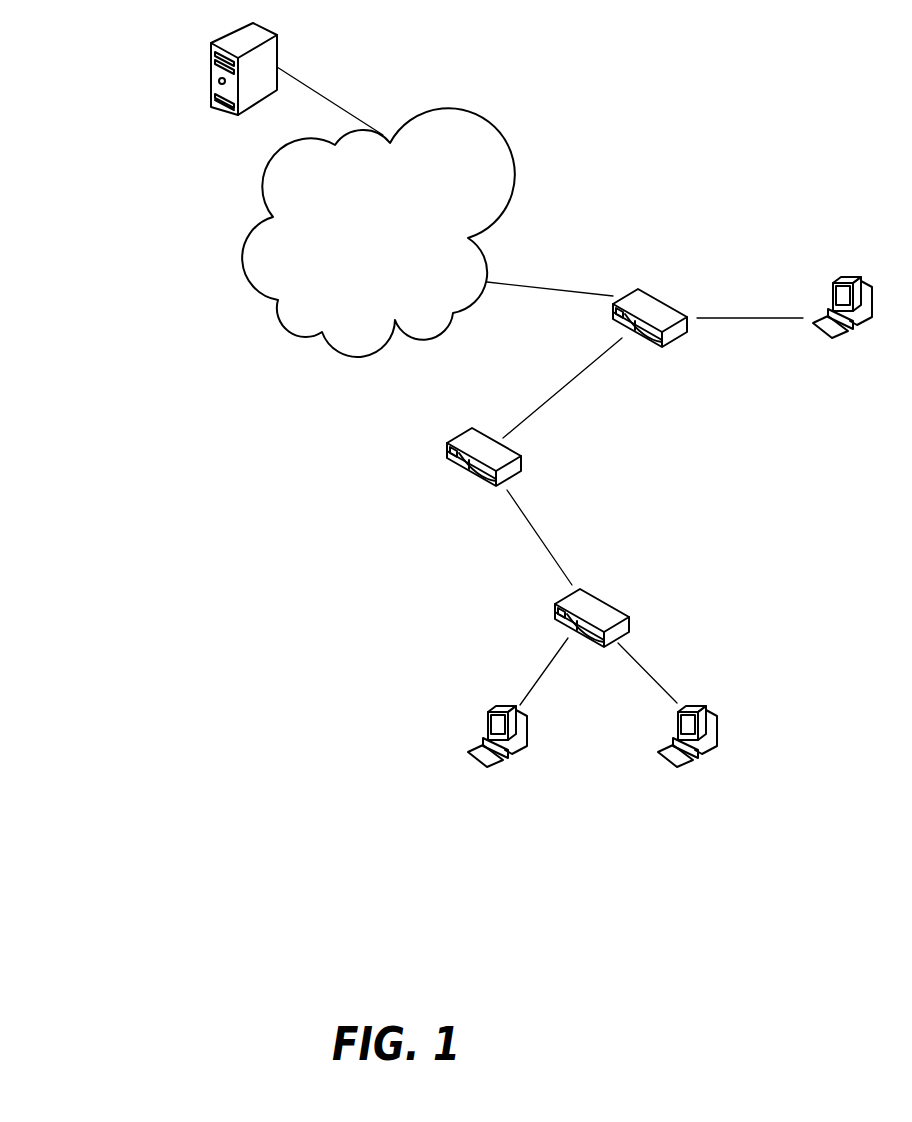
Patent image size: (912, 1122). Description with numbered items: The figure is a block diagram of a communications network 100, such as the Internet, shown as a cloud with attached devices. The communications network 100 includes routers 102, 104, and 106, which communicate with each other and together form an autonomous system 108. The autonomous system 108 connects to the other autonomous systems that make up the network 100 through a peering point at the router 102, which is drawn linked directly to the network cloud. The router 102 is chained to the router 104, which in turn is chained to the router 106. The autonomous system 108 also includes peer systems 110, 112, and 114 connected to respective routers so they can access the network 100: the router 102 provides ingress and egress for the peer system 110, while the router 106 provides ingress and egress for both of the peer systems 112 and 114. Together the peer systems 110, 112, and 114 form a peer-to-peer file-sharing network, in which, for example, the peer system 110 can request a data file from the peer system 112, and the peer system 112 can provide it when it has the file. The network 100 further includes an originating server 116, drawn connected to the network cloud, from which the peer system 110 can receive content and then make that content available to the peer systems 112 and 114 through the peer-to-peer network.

The communications network 100 is at (176, 407).
The router 102 is at (660, 300).
The router 104 is at (522, 472).
The router 106 is at (568, 598).
The autonomous system 108 is at (700, 125).
The peer system 110 is at (833, 283).
The peer system 112 is at (488, 710).
The peer system 114 is at (678, 710).
The originating server 116 is at (234, 33).